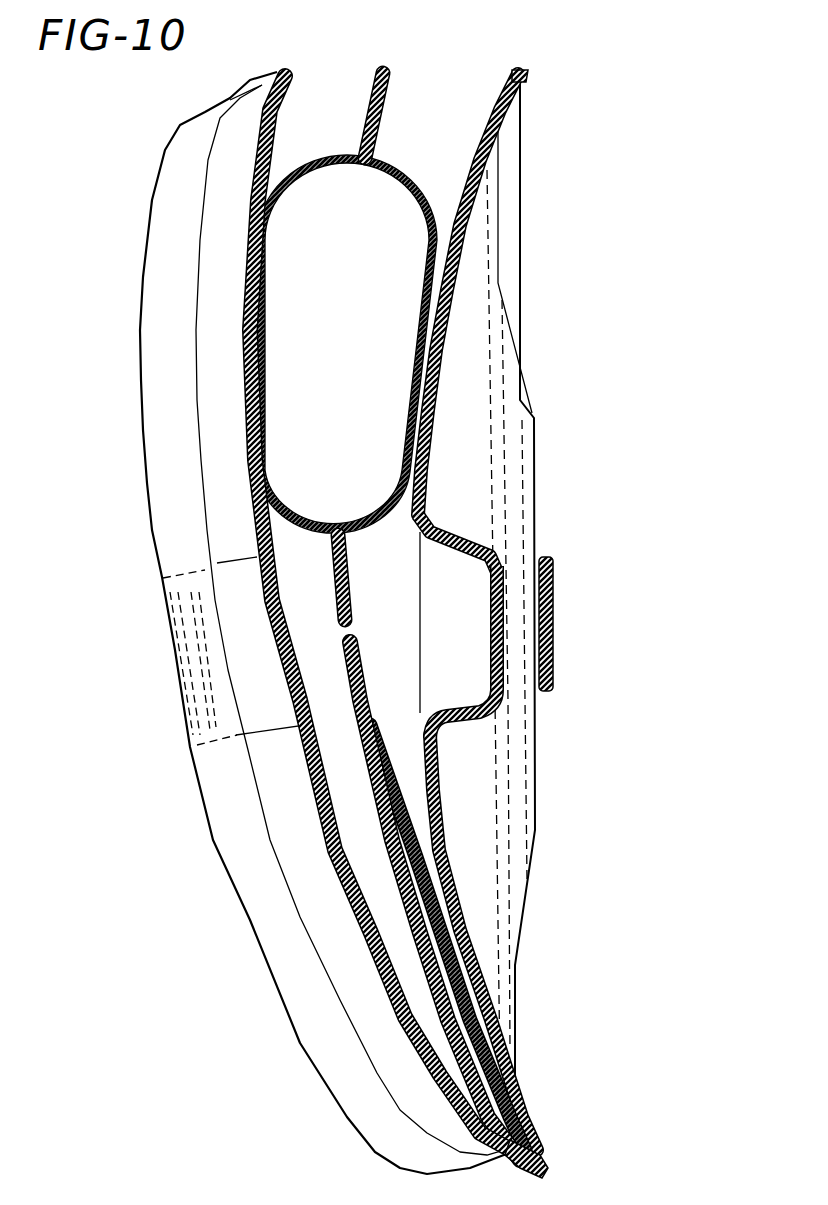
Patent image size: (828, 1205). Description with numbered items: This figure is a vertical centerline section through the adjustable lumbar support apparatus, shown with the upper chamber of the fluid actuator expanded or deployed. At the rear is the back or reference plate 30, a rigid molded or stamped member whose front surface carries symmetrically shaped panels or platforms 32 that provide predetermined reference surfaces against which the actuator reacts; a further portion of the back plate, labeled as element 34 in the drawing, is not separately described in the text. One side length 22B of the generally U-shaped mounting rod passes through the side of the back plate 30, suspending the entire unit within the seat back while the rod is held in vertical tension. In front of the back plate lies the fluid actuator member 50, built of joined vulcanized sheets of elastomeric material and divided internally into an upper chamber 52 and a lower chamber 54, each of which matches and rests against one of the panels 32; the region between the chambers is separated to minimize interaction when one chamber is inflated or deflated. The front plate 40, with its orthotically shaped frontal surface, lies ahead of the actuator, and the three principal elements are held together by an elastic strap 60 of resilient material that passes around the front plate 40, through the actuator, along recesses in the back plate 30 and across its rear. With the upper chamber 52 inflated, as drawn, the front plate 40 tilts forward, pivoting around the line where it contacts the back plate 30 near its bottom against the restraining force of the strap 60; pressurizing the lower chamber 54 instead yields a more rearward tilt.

The side length of U-shaped rod 22B is at (508, 175).
The back or reference plate 30 is at (455, 512).
The panels or platforms 32 is at (440, 382).
The web of channel member 34 is at (497, 644).
The front plate 40 is at (170, 430).
The fluid actuator member 50 is at (360, 733).
The upper chamber 52 is at (385, 250).
The lower chamber 54 is at (440, 830).
The elastic strap 60 is at (552, 607).